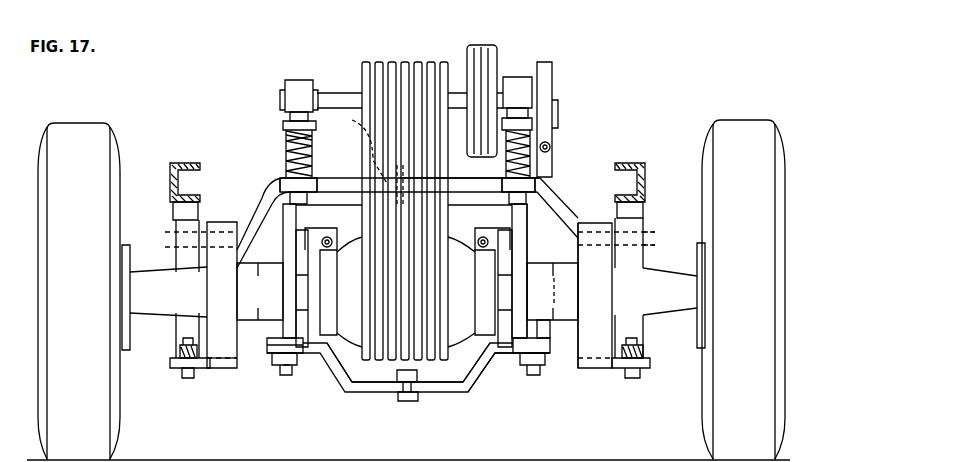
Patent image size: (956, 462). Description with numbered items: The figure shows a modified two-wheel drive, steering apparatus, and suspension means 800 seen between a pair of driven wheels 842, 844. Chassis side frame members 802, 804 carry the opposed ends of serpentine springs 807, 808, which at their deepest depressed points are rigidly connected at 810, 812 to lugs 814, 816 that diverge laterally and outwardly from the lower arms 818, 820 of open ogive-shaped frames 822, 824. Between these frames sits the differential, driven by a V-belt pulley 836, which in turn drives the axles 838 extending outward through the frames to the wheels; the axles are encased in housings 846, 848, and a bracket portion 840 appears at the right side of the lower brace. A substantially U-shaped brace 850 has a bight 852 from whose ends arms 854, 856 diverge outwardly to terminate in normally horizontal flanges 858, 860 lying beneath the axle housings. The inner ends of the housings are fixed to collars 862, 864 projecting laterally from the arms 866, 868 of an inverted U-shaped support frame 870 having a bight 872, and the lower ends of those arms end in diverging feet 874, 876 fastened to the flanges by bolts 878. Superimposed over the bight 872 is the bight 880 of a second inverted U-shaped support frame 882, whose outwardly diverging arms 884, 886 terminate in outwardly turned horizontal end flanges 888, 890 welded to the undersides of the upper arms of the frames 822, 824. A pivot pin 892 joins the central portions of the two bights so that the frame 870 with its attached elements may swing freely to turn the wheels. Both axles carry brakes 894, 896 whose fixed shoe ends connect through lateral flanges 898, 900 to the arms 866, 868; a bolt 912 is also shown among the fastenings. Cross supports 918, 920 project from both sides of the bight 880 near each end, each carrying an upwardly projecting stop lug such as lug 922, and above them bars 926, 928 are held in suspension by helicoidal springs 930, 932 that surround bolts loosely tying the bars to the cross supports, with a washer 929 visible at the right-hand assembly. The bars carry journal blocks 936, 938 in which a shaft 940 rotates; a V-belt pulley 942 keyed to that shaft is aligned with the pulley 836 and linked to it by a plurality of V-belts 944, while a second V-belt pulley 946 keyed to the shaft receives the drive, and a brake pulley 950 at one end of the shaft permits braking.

The two-wheel drive, steering apparatus, and suspension means 800 is at (256, 165).
The chassis side frame member 802 is at (183, 163).
The chassis side frame member 804 is at (651, 137).
The serpentine spring 807 is at (182, 332).
The serpentine spring 808 is at (637, 255).
The rigid connection 810 is at (188, 380).
The rigid connection 812 is at (636, 373).
The lug 814 is at (168, 372).
The lug 816 is at (645, 365).
The lower arm 818 is at (215, 370).
The lower arm 820 is at (588, 375).
The open ogive-shaped frame 822 is at (221, 214).
The open ogive-shaped frame 824 is at (577, 353).
The V-belt pulley 836 is at (359, 357).
The axle 838 is at (296, 376).
The bracket right end 840 is at (479, 360).
The wheel 842 is at (97, 101).
The wheel 844 is at (770, 91).
The axle housing 846 is at (178, 304).
The axle housing 848 is at (661, 300).
The U-shaped brace 850 is at (456, 401).
The bight 852 is at (372, 392).
The arm 854 is at (346, 382).
The arm 856 is at (474, 384).
The flange 858 is at (280, 357).
The flange 860 is at (548, 370).
The collar 862 is at (285, 258).
The collar 864 is at (529, 263).
The arm 866 is at (290, 272).
The arm 868 is at (523, 285).
The inverted U-shaped support frame 870 is at (352, 156).
The bight 872 is at (465, 203).
The foot 874 is at (272, 342).
The foot 876 is at (543, 322).
The bolt 878 is at (284, 377).
The bight 880 is at (484, 181).
The second inverted U-shaped support frame 882 is at (595, 172).
The arm 884 is at (245, 203).
The arm 886 is at (562, 206).
The end flange 888 is at (185, 289).
The end flange 890 is at (643, 221).
The pivot pin 892 is at (362, 157).
The brake 894 is at (342, 239).
The brake 896 is at (490, 232).
The lateral flange 898 is at (318, 236).
The lateral flange 900 is at (512, 230).
The bolt 912 is at (428, 393).
The cross support 918 is at (280, 176).
The cross support 920 is at (536, 185).
The stop lug 922 is at (286, 140).
The bar 926 is at (283, 120).
The bar 928 is at (532, 124).
The right nut 929 is at (537, 140).
The helicoidal spring 930 is at (314, 142).
The helicoidal spring 932 is at (550, 147).
The journal block 936 is at (285, 88).
The journal block 938 is at (520, 76).
The shaft 940 is at (322, 88).
The V-belt pulley 942 is at (360, 92).
The V-belts 944 is at (403, 60).
The second V-belt pulley 946 is at (497, 52).
The brake pulley 950 is at (553, 69).